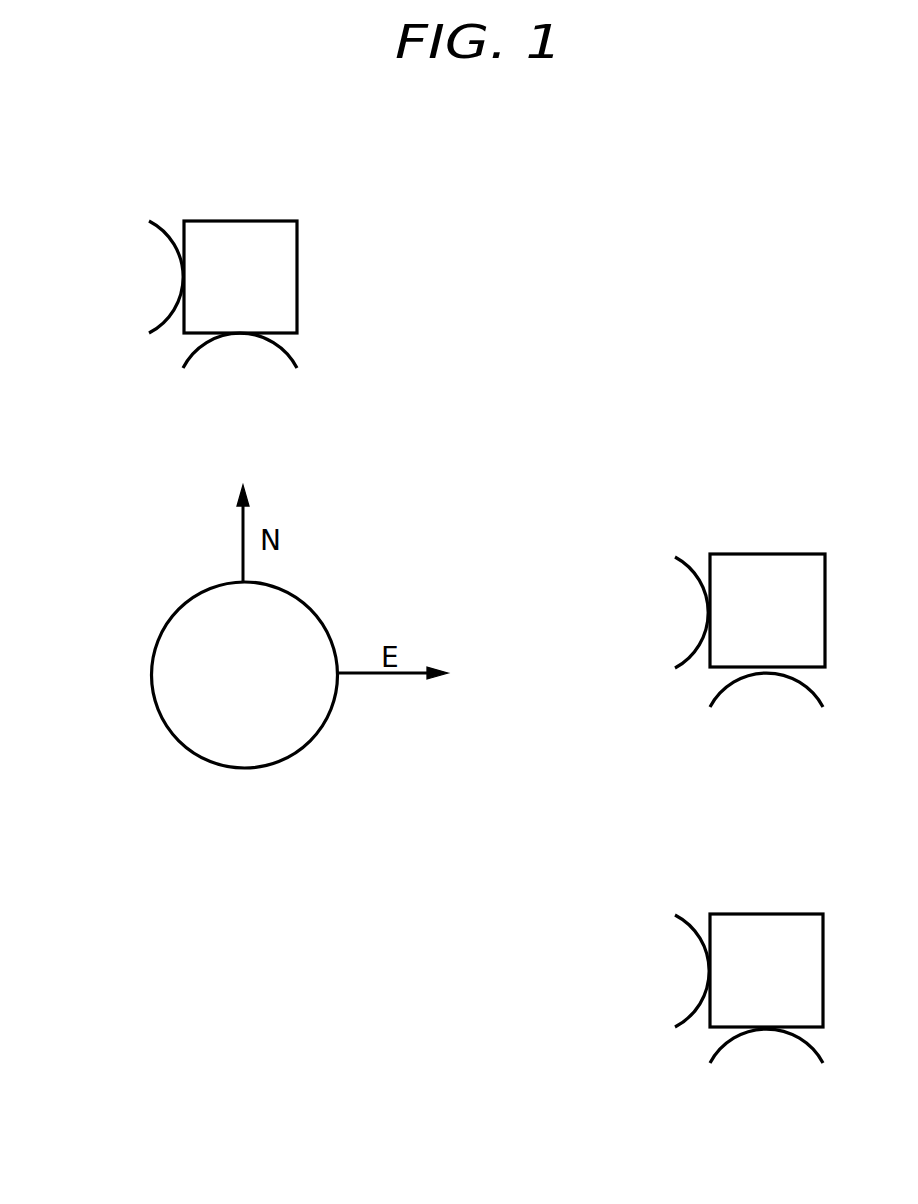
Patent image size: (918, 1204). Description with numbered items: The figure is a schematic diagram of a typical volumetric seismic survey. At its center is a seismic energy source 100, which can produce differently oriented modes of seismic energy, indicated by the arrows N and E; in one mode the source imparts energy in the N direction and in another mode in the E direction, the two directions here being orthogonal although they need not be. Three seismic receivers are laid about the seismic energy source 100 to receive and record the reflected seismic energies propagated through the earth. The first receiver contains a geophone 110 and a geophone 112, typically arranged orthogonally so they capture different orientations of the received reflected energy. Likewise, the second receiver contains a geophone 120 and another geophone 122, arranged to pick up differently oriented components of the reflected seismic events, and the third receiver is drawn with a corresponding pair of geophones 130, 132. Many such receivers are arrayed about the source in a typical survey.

The seismic energy source 100 is at (151, 667).
The geophone 110 is at (150, 223).
The geophone 112 is at (290, 357).
The geophone 120 is at (680, 560).
The geophone 122 is at (815, 693).
The west-facing detector of receiver R3 130 is at (680, 920).
The south-facing detector of receiver R3 132 is at (815, 1052).